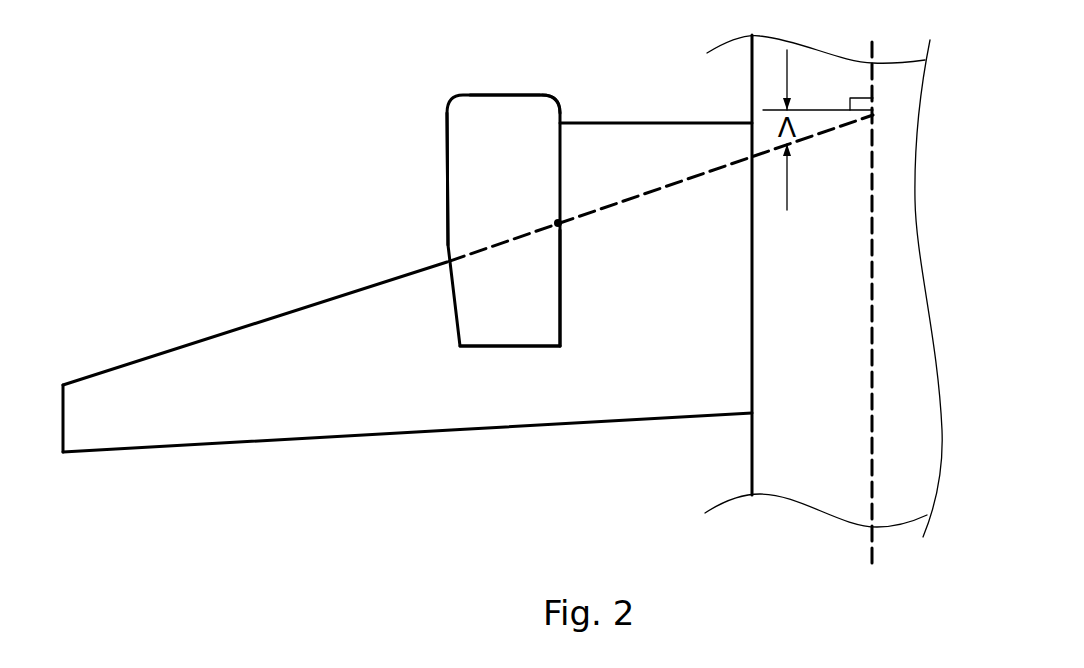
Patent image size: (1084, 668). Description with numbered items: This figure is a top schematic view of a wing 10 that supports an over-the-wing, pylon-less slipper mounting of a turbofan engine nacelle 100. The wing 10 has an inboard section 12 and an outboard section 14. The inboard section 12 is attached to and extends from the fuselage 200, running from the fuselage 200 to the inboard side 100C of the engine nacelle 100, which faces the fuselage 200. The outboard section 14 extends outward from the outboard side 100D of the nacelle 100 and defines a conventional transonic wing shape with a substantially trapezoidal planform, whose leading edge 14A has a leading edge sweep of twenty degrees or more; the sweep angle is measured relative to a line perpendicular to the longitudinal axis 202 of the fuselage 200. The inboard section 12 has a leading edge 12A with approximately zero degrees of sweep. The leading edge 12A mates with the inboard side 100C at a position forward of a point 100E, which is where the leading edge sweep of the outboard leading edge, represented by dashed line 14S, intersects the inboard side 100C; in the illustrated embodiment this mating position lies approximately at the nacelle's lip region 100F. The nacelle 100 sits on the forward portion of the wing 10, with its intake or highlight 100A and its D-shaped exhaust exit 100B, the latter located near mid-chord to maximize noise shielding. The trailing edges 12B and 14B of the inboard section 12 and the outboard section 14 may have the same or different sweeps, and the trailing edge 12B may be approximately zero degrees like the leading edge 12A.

The wing 10 is at (280, 245).
The inboard section 12 is at (606, 304).
The leading edge 12A is at (656, 102).
The trailing edge 12B is at (606, 470).
The outboard section 14 is at (261, 393).
The leading edge 14A is at (255, 323).
The trailing edge 14B is at (261, 478).
The leading edge sweep line 14S is at (605, 188).
The engine nacelle 100 is at (518, 202).
The intake or highlight 100A is at (440, 56).
The exhaust exit 100B is at (493, 346).
The inboard side 100C is at (613, 288).
The outboard side 100D is at (394, 179).
The point 100E is at (625, 138).
The lip region 100F is at (605, 56).
The fuselage 200 is at (772, 286).
The longitudinal axis 202 is at (801, 303).